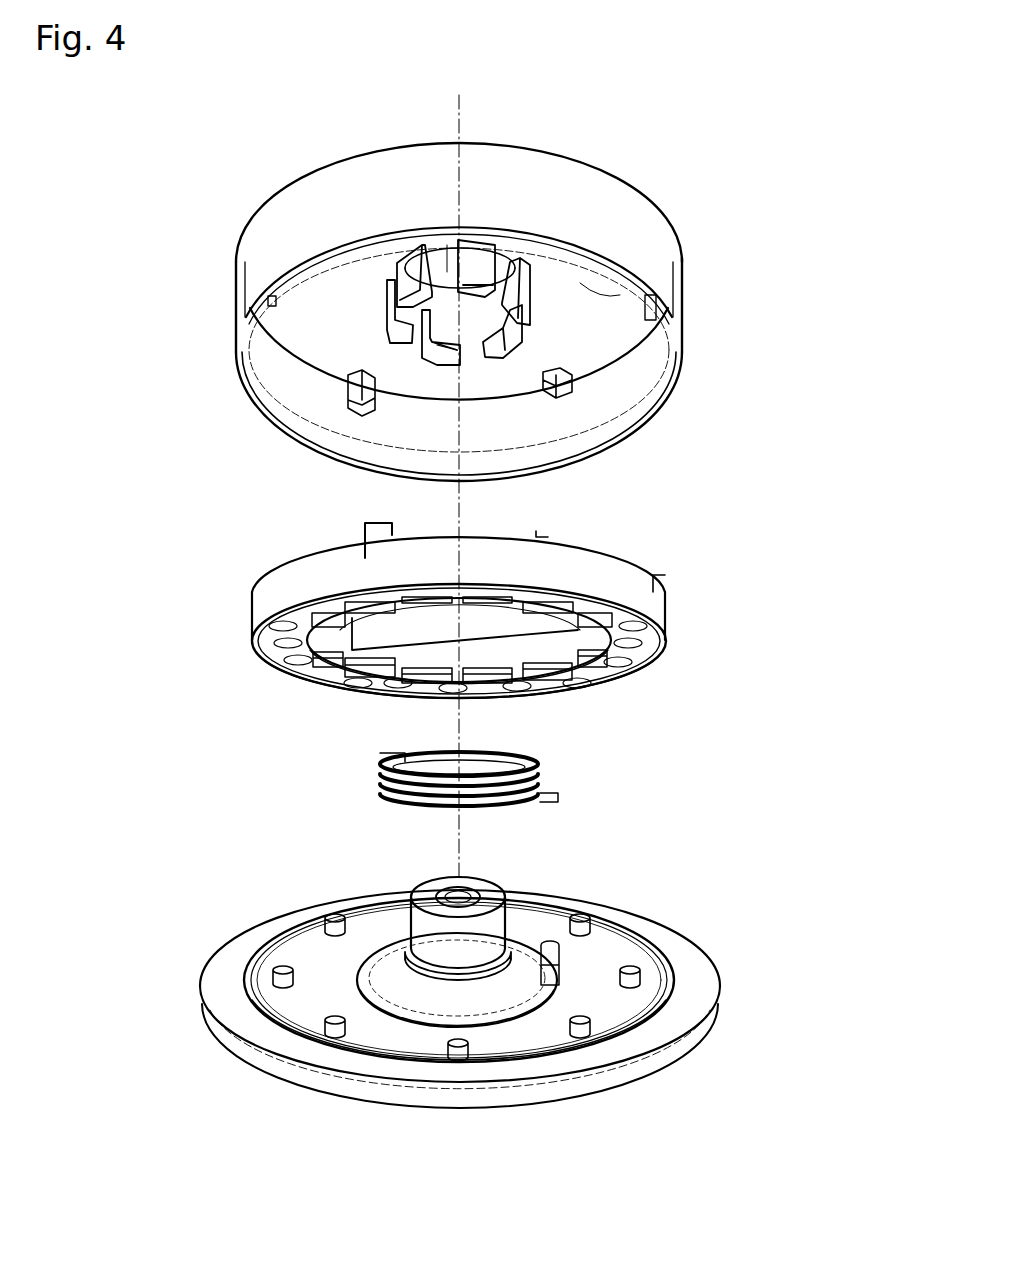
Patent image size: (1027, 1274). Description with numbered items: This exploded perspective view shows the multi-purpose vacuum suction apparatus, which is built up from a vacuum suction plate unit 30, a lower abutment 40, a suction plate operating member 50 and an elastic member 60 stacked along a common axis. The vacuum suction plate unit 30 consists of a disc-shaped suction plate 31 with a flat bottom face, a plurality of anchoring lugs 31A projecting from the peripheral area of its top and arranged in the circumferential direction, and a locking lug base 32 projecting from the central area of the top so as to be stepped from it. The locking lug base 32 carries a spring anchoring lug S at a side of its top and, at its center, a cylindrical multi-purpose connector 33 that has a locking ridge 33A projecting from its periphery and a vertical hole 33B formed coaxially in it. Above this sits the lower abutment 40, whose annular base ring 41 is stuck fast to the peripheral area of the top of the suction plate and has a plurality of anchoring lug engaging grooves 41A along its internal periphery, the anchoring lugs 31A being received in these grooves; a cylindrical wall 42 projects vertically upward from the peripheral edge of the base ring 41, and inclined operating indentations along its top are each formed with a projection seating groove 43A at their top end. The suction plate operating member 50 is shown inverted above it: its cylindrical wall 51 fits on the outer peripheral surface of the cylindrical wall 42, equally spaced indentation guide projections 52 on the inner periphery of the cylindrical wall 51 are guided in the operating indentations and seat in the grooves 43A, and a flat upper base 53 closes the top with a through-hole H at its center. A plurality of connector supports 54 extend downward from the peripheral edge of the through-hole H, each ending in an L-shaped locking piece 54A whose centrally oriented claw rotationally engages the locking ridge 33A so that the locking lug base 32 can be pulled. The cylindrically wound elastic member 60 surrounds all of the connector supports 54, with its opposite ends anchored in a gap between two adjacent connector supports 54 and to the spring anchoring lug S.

The vacuum suction plate unit 30 is at (457, 981).
The suction plate 31 is at (657, 1042).
The anchoring lugs 31A is at (282, 967).
The locking lug base 32 is at (507, 987).
The multi-purpose connector 33 is at (422, 893).
The locking ridge 33A is at (397, 947).
The vertical hole 33B is at (470, 893).
The spring anchoring lug S is at (550, 947).
The lower abutment 40 is at (464, 616).
The annular base ring 41 is at (648, 650).
The anchoring lug engaging grooves 41A is at (305, 668).
The cylindrical wall 42 is at (253, 594).
The projection seating groove 43A is at (540, 537).
The suction plate operating member 50 is at (447, 295).
The cylindrical wall 51 is at (250, 256).
The indentation guide projections 52 is at (388, 410).
The upper base 53 is at (577, 286).
The connector supports 54 is at (393, 267).
The locking piece 54A is at (395, 358).
The elastic member 60 is at (546, 772).
The through-hole H is at (447, 272).